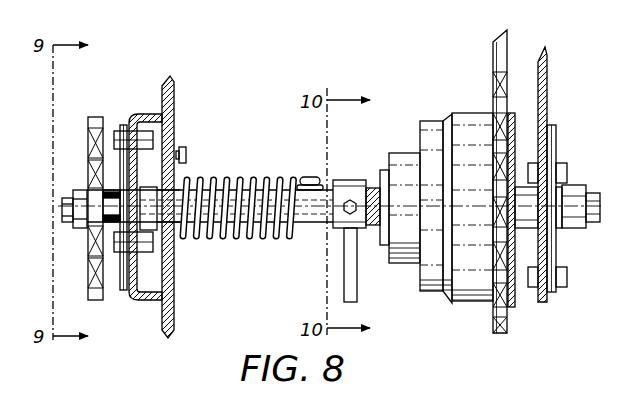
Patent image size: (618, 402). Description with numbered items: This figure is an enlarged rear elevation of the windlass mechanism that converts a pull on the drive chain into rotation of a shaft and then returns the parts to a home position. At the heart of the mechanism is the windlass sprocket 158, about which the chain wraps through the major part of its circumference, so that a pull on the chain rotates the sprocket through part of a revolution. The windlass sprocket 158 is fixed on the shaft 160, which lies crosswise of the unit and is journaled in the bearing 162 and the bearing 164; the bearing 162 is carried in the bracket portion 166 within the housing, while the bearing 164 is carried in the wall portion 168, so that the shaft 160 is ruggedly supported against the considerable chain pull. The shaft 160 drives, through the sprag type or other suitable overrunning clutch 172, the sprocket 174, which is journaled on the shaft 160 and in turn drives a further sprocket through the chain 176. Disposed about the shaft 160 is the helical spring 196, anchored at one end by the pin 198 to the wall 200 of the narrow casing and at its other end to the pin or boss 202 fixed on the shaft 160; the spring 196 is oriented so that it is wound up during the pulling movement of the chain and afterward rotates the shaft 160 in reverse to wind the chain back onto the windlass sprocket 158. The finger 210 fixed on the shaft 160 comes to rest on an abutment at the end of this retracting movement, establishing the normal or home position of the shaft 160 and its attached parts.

The windlass sprocket 158 is at (92, 133).
The shaft 160 is at (63, 207).
The bearing 162 is at (120, 163).
The bearing 164 is at (555, 158).
The bracket portion 166 is at (152, 101).
The wall portion 168 is at (544, 70).
The overrunning clutch 172 is at (424, 118).
The sprocket 174 is at (493, 126).
The chain 176 is at (493, 47).
The helical spring 196 is at (222, 178).
The pin 198 is at (186, 156).
The wall 200 is at (175, 263).
The pin or boss 202 is at (307, 176).
The finger 210 is at (358, 272).